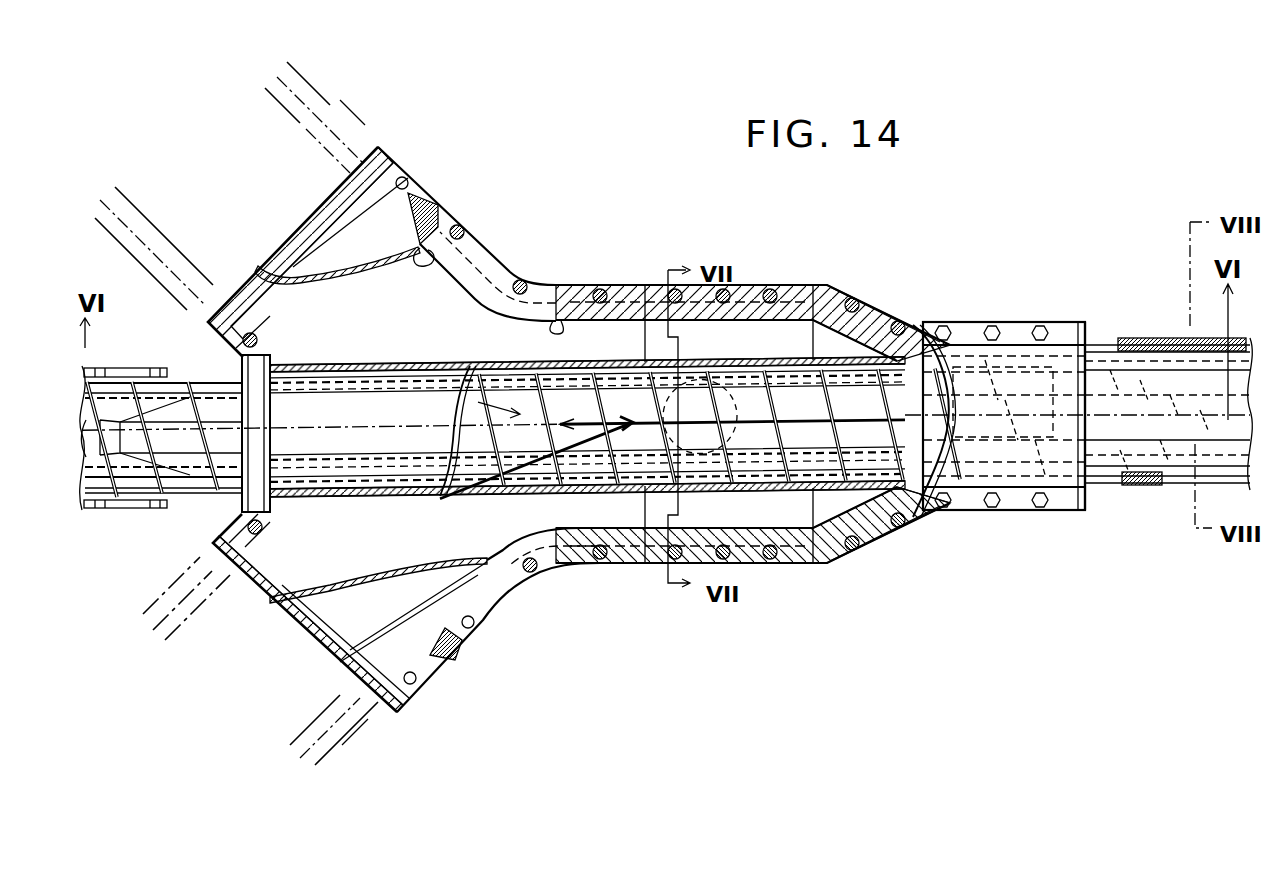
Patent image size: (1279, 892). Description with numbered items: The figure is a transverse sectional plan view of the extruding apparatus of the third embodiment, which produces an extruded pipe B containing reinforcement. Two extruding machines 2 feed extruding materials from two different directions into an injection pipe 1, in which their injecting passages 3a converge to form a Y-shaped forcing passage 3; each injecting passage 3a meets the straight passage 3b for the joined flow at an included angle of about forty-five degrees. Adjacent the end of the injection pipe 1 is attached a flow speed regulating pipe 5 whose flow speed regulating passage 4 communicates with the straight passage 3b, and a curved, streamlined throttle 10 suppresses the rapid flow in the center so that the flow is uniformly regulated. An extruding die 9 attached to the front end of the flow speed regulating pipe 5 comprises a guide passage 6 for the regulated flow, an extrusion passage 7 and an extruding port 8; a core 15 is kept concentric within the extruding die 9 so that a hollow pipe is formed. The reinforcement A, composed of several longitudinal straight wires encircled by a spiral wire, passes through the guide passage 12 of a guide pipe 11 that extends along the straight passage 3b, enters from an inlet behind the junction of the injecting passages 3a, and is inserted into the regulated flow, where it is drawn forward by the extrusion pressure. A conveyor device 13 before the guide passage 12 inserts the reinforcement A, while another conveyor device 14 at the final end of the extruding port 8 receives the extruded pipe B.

The injection pipe 1 is at (364, 252).
The extruding machine 2 is at (261, 407).
The forcing passage 3 is at (405, 234).
The injecting passage 3a is at (472, 687).
The straight passage 3b is at (515, 281).
The flow speed regulating passage 4 is at (753, 300).
The flow speed regulating pipe 5 is at (755, 276).
The guide passage for the regulated flow 6 is at (877, 573).
The extrusion passage 7 is at (927, 537).
The extruding port 8 is at (1102, 392).
The extruding die 9 is at (1077, 387).
The throttle 10 is at (753, 545).
The guide pipe 11 is at (521, 392).
The guide passage 12 is at (432, 372).
The conveyor device 13 is at (161, 407).
The conveyor device 14 is at (1182, 446).
The core 15 is at (912, 391).
The reinforcement A is at (1122, 478).
The extruded pipe B is at (1168, 381).